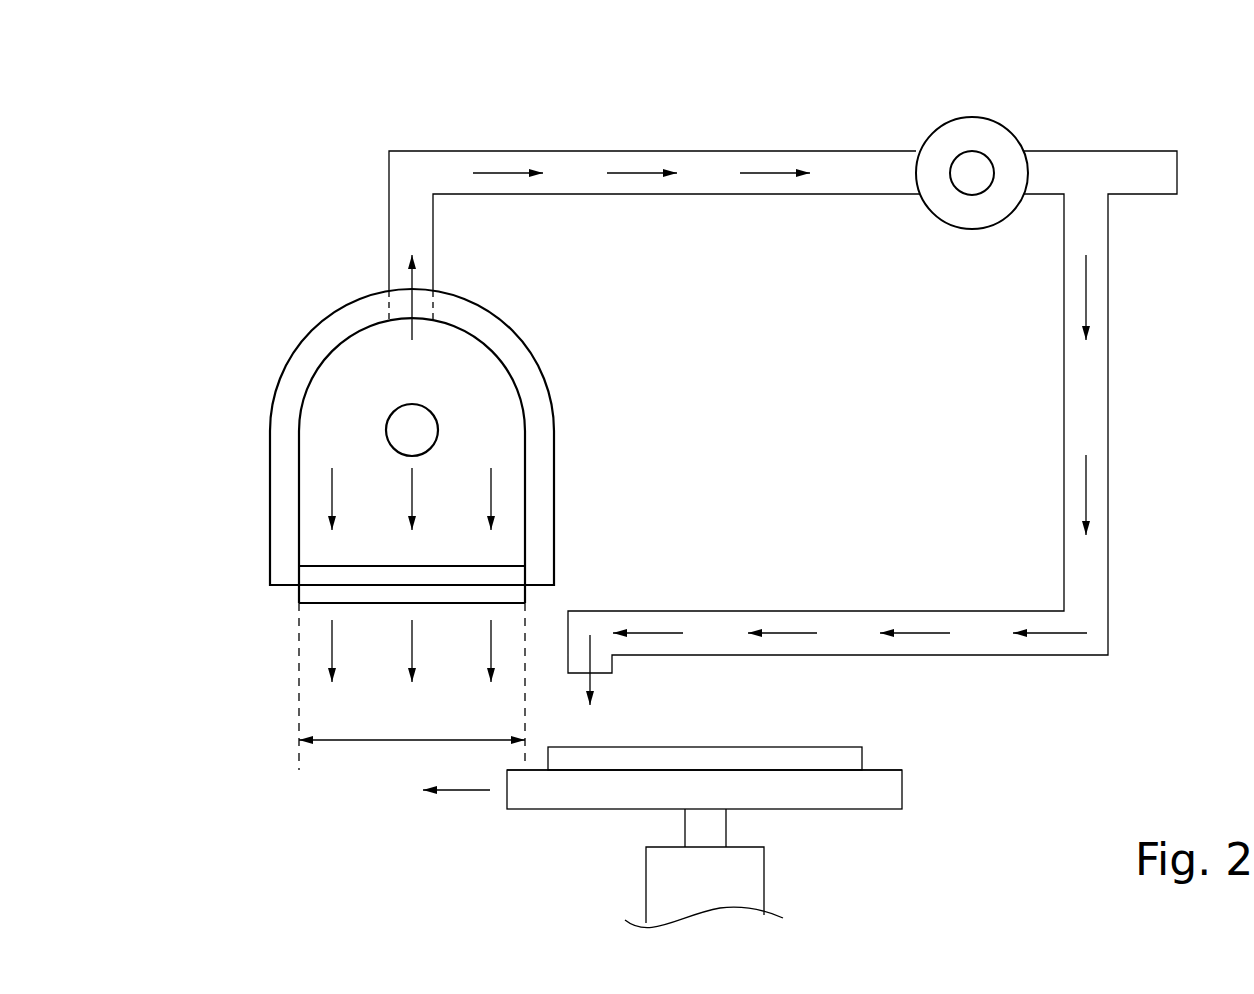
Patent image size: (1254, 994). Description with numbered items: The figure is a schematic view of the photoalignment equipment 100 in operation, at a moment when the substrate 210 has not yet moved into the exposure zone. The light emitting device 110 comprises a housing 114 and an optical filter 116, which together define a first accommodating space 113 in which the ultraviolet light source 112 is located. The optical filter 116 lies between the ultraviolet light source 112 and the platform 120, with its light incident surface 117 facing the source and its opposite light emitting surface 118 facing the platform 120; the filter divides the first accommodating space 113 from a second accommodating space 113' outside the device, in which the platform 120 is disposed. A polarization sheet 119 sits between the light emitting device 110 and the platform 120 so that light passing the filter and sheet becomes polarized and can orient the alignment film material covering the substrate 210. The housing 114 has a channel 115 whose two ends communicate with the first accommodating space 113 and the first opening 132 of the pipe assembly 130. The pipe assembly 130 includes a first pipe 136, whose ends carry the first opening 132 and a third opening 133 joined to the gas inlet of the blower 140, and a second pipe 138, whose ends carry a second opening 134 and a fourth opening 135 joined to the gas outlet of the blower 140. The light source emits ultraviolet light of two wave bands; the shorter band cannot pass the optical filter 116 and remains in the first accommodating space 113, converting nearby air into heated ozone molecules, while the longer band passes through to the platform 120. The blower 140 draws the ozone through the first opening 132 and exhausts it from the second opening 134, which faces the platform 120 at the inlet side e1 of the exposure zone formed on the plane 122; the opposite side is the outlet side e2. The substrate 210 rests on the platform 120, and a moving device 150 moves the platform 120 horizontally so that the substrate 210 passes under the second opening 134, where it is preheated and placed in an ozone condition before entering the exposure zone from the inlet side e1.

The photoalignment equipment 100 is at (208, 88).
The light emitting device 110 is at (143, 352).
The ultraviolet light source 112 is at (400, 428).
The first accommodating space 113 is at (378, 392).
The second accommodating space 113' is at (498, 650).
The housing 114 is at (302, 368).
The channel 115 is at (434, 308).
The optical filter 116 is at (355, 578).
The light incident surface 117 is at (462, 566).
The light emitting surface 118 is at (318, 588).
The polarization sheet 119 is at (372, 620).
The platform 120 is at (890, 790).
The plane 122 is at (893, 768).
The pipe assembly 130 is at (827, 325).
The first opening 132 is at (430, 290).
The third opening 133 is at (915, 168).
The second opening 134 is at (597, 676).
The fourth opening 135 is at (1033, 175).
The first pipe 136 is at (860, 180).
The second pipe 138 is at (1085, 425).
The blower 140 is at (970, 117).
The moving device 150 is at (748, 878).
The substrate 210 is at (728, 755).
The inlet side e1 is at (528, 700).
The outlet side e2 is at (297, 675).